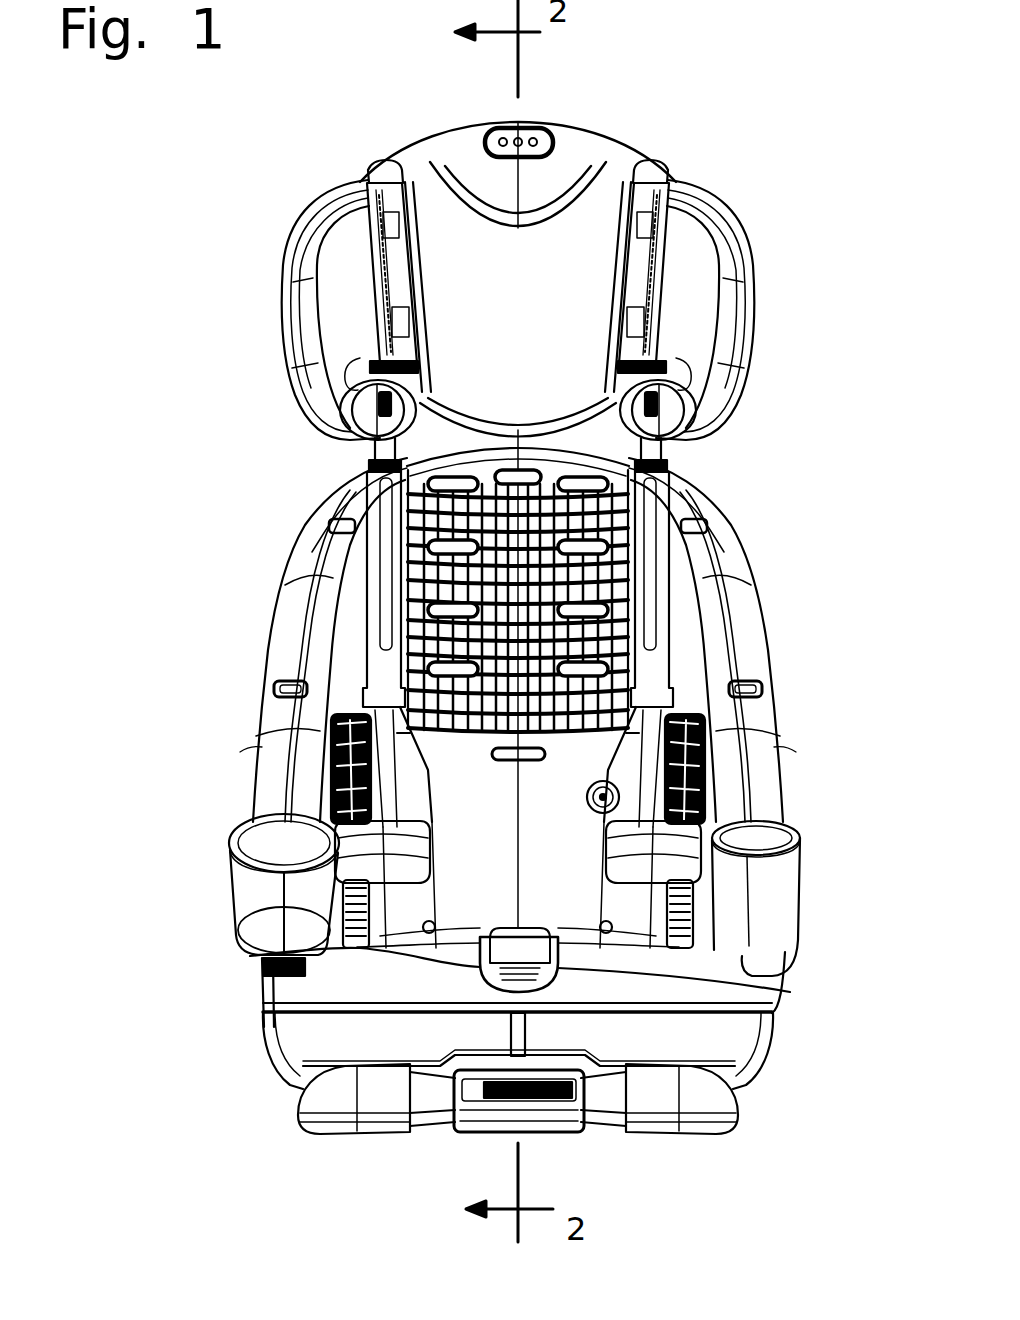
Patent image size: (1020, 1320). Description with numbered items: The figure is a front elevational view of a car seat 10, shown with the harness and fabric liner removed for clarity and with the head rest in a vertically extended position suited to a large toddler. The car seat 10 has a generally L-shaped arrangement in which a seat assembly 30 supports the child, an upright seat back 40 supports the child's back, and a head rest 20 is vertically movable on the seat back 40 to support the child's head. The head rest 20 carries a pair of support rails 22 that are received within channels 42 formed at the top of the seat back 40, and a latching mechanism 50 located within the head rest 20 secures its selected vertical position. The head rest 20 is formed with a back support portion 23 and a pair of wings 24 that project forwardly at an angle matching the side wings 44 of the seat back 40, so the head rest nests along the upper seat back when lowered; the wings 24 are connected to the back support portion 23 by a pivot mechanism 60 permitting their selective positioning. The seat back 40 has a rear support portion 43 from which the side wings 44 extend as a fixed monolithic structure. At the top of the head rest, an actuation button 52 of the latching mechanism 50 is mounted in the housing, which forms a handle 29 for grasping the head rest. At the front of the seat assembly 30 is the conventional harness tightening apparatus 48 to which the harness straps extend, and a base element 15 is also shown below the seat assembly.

The car seat 10 is at (223, 220).
The recline handle 15 is at (337, 1103).
The head rest 20 is at (757, 157).
The support rails 22 is at (368, 456).
The back support portion 23 is at (560, 263).
The wings 24 is at (317, 313).
The handle 29 is at (577, 133).
The seat assembly 30 is at (213, 1013).
The seat back 40 is at (240, 567).
The channels 42 is at (372, 652).
The rear support portion 43 is at (547, 757).
The side wings 44 is at (283, 750).
The harness tightening apparatus 48 is at (560, 975).
The latching mechanism 50 is at (418, 60).
The actuation button 52 is at (507, 128).
The pivot mechanism 60 is at (378, 165).